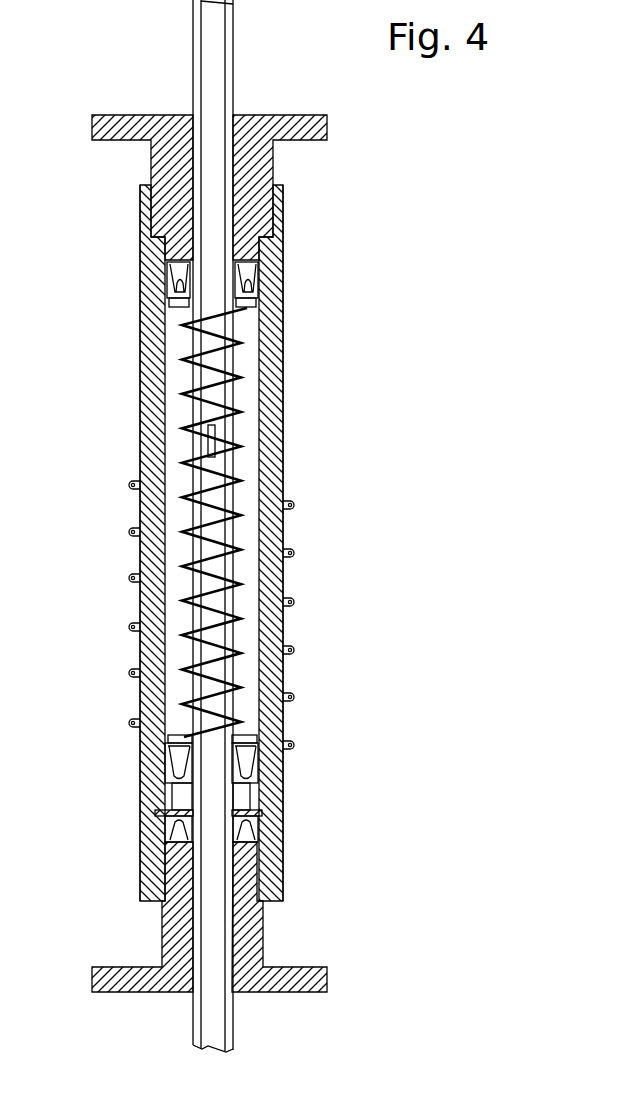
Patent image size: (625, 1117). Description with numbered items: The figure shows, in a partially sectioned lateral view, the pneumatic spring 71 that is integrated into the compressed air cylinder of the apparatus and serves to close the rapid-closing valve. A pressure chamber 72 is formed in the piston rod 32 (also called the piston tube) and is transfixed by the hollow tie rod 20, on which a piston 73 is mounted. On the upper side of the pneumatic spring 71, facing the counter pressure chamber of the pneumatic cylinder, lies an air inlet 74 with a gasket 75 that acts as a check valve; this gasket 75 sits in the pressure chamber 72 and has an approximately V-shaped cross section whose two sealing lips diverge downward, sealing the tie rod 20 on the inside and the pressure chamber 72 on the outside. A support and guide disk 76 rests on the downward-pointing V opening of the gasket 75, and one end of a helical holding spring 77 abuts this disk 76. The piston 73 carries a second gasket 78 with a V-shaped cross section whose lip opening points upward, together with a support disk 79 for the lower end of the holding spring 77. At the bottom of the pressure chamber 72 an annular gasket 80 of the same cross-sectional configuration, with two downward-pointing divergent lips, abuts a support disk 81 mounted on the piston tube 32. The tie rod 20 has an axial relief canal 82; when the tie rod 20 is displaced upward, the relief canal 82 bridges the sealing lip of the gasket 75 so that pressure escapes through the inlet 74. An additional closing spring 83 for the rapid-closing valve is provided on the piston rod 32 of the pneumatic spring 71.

The pneumatic spring 71 is at (345, 272).
The pressure chamber 72 is at (253, 556).
The piston rod 32 is at (283, 641).
The air inlet 74 is at (193, 116).
The gasket 75 is at (250, 270).
The support and guide disk 76 is at (256, 304).
The hollow tie rod 20 is at (239, 393).
The axial relief canal 82 is at (216, 432).
The helical holding spring 77 is at (236, 482).
The closing spring 83 is at (128, 578).
The support disk 79 is at (258, 735).
The gasket 78 is at (246, 771).
The piston 73 is at (243, 796).
The support disk 81 is at (258, 811).
The annular gasket 80 is at (252, 826).